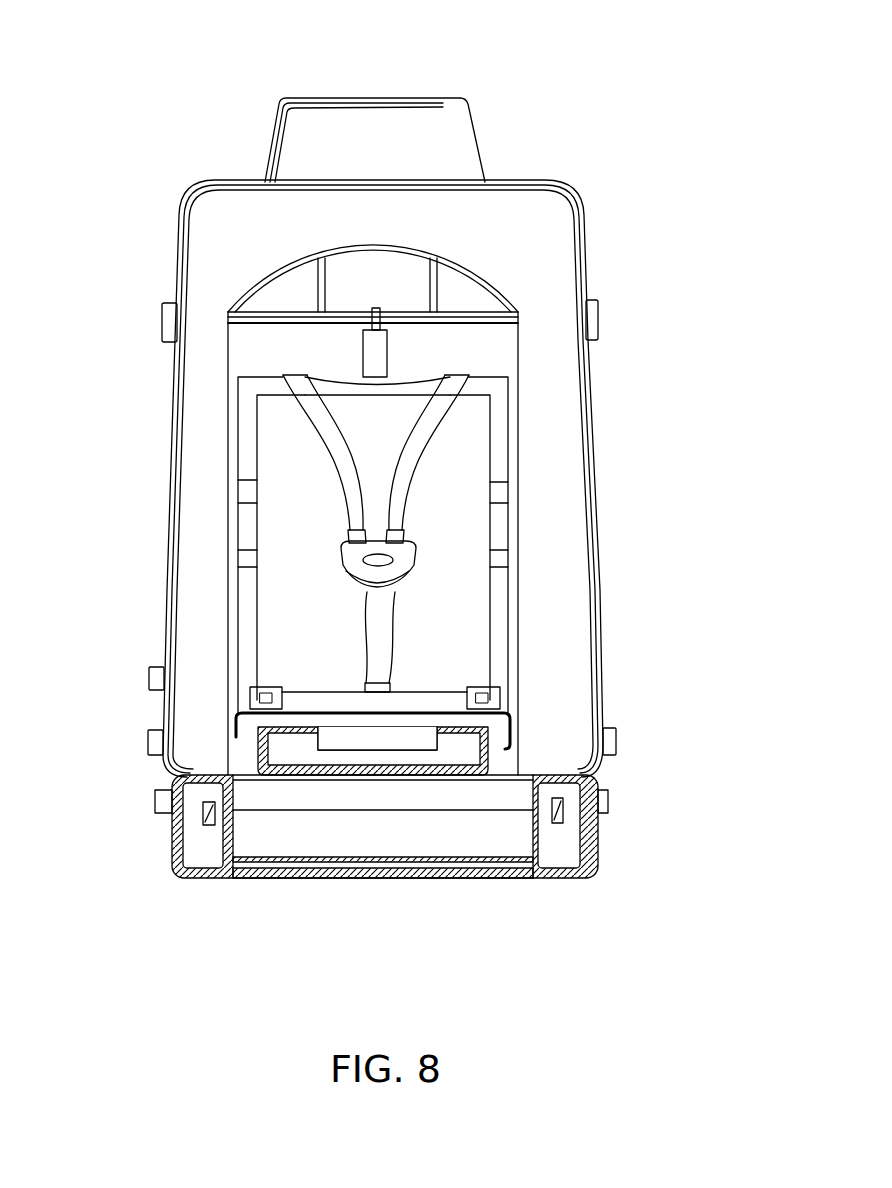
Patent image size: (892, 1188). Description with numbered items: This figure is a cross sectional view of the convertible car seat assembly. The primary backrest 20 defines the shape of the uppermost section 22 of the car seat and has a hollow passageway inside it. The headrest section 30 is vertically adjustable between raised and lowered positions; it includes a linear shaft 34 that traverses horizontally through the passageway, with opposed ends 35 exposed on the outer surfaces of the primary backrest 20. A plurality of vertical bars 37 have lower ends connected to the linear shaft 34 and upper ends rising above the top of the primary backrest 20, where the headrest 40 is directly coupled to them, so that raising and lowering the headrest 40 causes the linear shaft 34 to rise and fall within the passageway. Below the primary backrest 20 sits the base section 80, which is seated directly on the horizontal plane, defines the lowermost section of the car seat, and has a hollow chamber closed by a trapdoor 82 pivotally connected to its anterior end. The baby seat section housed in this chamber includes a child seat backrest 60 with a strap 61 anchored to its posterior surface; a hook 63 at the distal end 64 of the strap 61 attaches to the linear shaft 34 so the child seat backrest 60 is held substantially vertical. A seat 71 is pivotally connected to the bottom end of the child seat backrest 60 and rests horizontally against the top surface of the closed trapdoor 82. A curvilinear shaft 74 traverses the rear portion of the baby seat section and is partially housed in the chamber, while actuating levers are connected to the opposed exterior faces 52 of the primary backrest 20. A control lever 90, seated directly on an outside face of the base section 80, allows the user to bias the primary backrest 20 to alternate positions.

The primary backrest 20 is at (557, 240).
The uppermost section 22 is at (550, 270).
The headrest section 30 is at (415, 131).
The headrest 40 is at (438, 125).
The linear shaft 34 is at (435, 237).
The opposed ends 35 is at (395, 283).
The vertical bars 37 is at (418, 215).
The opposed exterior faces 52 is at (131, 639).
The child seat backrest 60 is at (464, 545).
The strap 61 is at (521, 382).
The hook 63 is at (525, 345).
The distal end 64 is at (277, 370).
The seat 71 is at (383, 832).
The curvilinear shaft 74 is at (466, 693).
The base section 80 is at (443, 828).
The trapdoor 82 is at (476, 752).
The control lever 90 is at (400, 743).